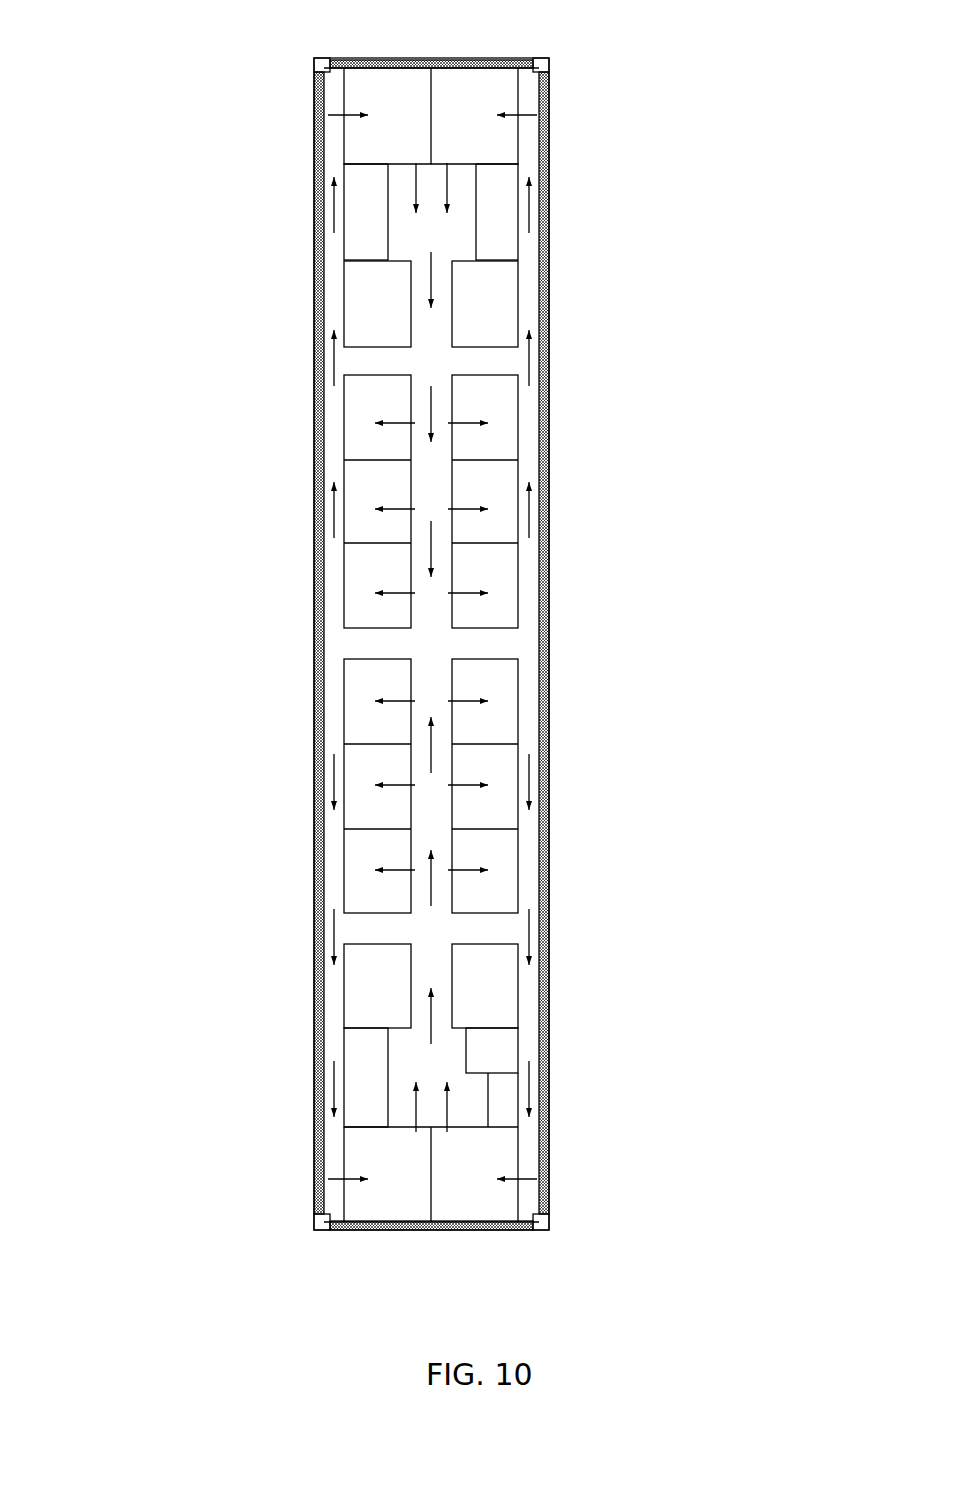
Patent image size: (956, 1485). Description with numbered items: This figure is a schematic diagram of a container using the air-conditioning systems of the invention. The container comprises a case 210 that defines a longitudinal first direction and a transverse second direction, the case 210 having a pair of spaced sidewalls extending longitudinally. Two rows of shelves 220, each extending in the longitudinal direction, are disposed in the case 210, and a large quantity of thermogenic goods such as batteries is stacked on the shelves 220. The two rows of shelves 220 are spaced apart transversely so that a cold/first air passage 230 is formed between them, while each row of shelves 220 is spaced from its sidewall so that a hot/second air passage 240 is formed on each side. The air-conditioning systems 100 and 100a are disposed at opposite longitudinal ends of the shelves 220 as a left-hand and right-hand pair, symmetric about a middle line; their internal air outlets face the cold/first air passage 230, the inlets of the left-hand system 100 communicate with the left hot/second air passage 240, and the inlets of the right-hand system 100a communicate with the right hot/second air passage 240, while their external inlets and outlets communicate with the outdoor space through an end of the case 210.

The air-conditioning system 100 is at (353, 95).
The air-conditioning system 100a is at (495, 97).
The case 210 is at (316, 303).
The shelves 220 is at (500, 430).
The cold/first air passage 230 is at (435, 478).
The hot/second air passage 240 is at (334, 420).